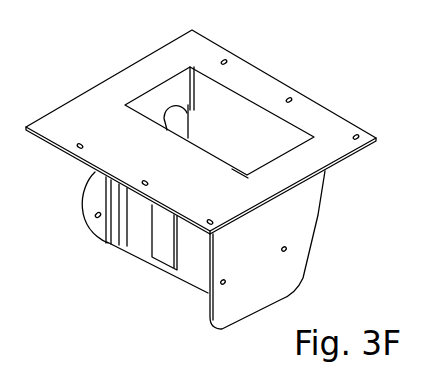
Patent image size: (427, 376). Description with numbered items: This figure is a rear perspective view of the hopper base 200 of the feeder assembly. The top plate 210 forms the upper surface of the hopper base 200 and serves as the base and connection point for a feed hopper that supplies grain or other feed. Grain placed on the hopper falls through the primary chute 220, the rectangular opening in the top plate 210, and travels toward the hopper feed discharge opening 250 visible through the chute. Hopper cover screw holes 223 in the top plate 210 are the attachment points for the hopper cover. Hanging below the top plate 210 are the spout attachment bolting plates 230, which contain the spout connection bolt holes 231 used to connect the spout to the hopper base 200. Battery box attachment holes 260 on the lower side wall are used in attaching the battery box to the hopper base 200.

The hopper base 200 is at (321, 212).
The top plate 210 is at (155, 160).
The primary chute 220 is at (239, 115).
The hopper cover screw holes 223 is at (288, 150).
The spout attachment bolting plates 230 is at (84, 216).
The spout connection bolt holes 231 is at (98, 221).
The hopper feed discharge opening 250 is at (180, 122).
The battery box attachment holes 260 is at (271, 248).